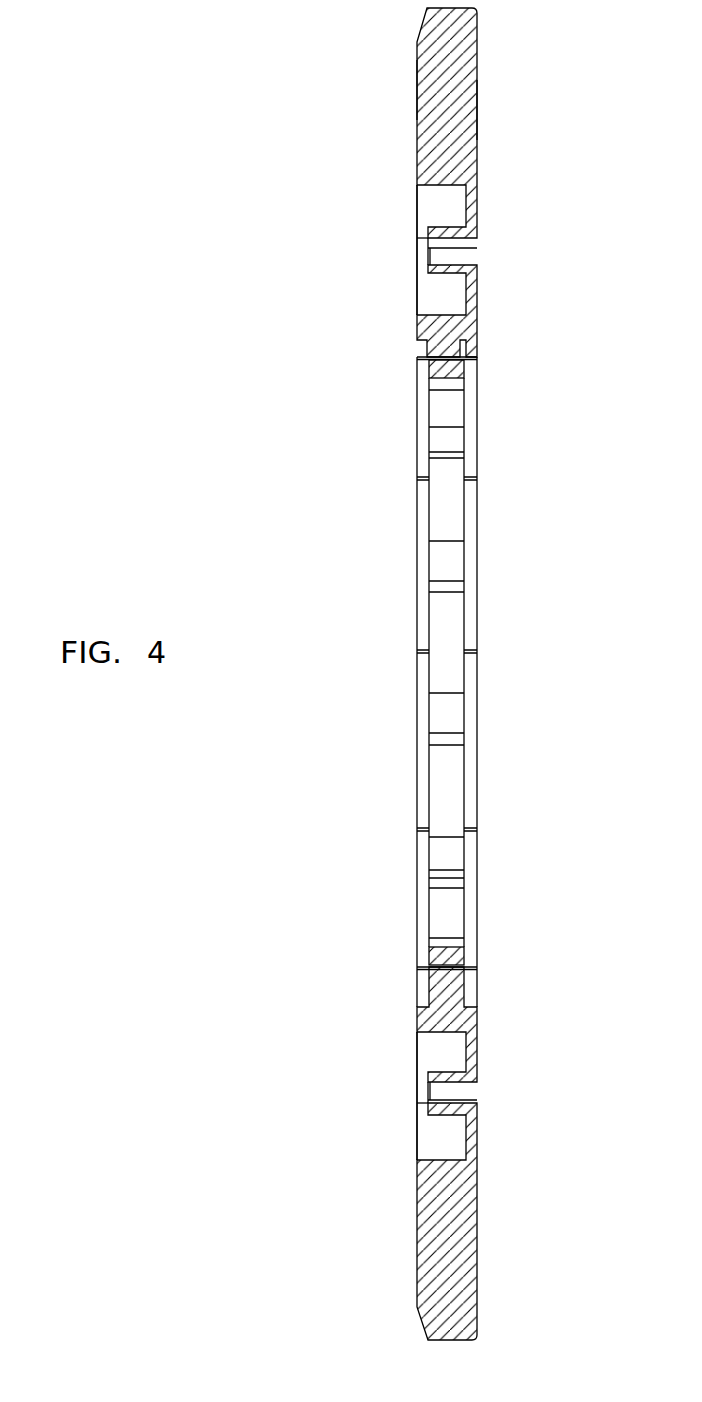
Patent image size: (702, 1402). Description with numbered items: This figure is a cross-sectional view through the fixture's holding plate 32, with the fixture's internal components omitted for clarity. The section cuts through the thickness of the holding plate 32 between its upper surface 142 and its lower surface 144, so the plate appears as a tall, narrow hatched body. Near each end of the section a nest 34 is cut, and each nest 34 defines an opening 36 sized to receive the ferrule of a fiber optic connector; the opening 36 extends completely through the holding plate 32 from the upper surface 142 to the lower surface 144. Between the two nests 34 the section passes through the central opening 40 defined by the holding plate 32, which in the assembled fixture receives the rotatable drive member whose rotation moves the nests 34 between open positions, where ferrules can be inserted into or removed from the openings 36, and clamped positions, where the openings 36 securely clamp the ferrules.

The holding plate 32 is at (477, 35).
The upper surface 142 is at (417, 91).
The lower surface 144 is at (477, 115).
The opening 36 is at (460, 237).
The nest 34 is at (400, 268).
The central opening 40 is at (473, 403).